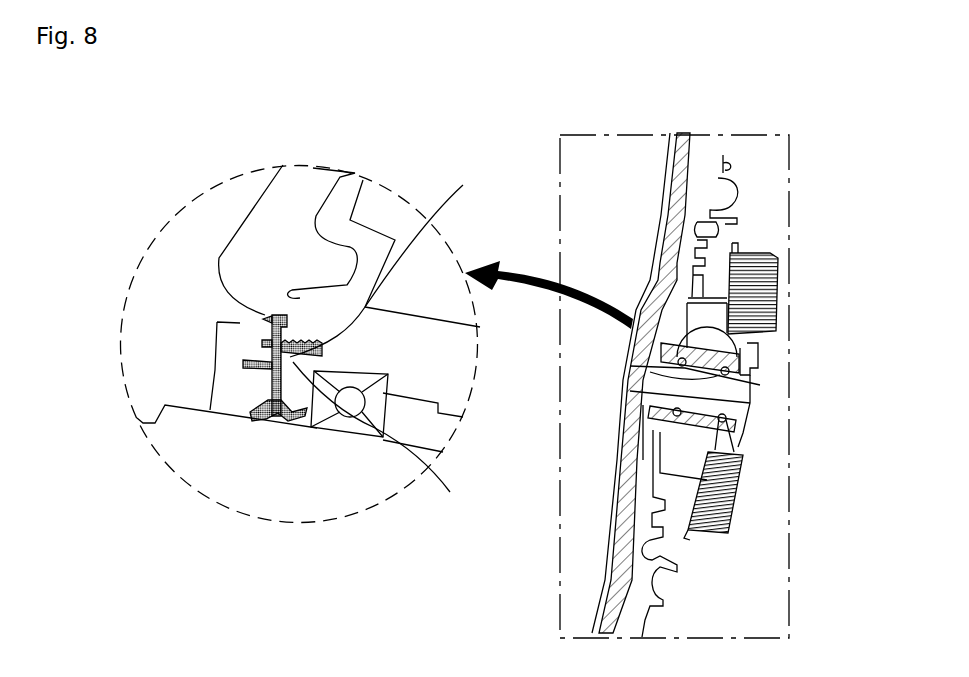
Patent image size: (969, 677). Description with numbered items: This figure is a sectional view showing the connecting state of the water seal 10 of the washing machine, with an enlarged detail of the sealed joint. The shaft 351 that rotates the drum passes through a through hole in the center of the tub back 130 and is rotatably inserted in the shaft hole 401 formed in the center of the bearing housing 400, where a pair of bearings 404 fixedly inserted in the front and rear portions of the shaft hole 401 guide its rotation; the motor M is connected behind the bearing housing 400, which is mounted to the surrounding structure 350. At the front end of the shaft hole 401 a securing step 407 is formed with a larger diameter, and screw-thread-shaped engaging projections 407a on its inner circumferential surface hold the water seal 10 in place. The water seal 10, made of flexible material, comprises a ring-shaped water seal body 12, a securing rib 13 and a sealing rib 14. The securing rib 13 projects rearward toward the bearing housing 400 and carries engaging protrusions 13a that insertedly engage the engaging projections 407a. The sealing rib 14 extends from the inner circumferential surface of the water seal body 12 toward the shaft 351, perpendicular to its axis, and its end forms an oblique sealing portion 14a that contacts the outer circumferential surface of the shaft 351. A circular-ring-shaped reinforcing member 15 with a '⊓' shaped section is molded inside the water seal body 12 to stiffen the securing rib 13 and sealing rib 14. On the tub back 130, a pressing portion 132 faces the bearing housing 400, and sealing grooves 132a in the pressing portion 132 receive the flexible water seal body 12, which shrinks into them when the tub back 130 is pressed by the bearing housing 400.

The water seal 10 is at (232, 360).
The water seal body 12 is at (205, 302).
The securing rib 13 is at (381, 441).
The engaging protrusions 13a is at (472, 341).
The sealing rib 14 is at (137, 418).
The oblique sealing portion 14a is at (270, 410).
The reinforcing member 15 is at (263, 366).
The tub back 130 is at (302, 178).
The pressing portion 132 is at (249, 207).
The sealing grooves 132a is at (263, 321).
The vehicle body wall 350 is at (212, 207).
The shaft 351 is at (370, 488).
The bearing housing 400 is at (586, 391).
The shaft hole 401 is at (740, 400).
The bearings 404 is at (750, 417).
The securing step 407 is at (396, 259).
The engaging projections 407a is at (392, 205).
The motor M is at (788, 290).